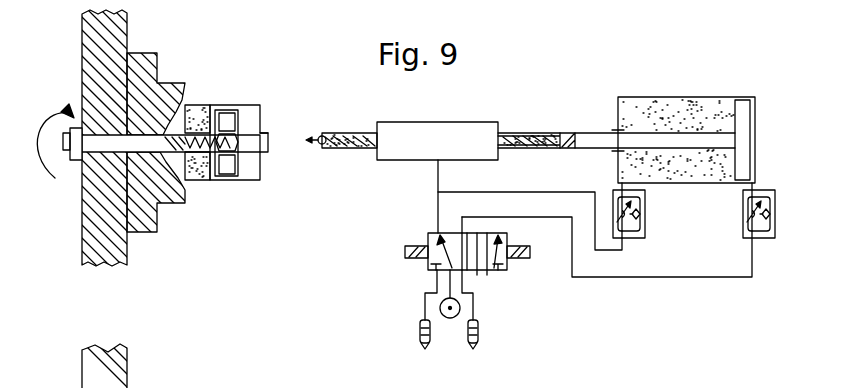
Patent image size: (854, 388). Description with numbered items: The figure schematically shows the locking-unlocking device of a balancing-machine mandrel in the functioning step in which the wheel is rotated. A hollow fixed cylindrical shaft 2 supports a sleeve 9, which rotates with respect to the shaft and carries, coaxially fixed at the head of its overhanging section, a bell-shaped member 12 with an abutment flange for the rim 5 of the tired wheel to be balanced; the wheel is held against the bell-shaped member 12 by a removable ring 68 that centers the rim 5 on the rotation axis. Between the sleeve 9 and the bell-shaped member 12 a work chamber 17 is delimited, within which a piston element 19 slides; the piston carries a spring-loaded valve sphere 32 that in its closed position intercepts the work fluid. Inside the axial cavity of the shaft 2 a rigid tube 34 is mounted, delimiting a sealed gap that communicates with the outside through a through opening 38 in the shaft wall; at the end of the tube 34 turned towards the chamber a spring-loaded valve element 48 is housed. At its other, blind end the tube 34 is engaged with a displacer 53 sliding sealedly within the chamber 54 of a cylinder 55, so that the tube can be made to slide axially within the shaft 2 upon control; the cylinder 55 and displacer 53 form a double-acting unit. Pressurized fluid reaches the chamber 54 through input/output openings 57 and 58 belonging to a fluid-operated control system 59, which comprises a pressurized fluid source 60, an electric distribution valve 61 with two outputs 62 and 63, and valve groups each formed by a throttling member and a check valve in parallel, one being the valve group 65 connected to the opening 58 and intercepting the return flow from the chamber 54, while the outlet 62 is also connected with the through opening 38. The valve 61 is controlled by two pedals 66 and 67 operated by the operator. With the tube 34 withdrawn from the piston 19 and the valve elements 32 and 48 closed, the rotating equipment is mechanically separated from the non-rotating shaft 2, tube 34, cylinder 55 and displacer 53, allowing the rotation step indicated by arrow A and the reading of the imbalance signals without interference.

The cylindrical shaft 2 is at (437, 121).
The tired wheel rim 5 is at (82, 266).
The sleeve 9 is at (262, 173).
The bell-shaped member 12 is at (157, 100).
The work chamber 17 is at (248, 170).
The piston element 19 is at (222, 106).
The sphere 32 is at (212, 181).
The tube 34 is at (348, 132).
The through opening 38 is at (439, 176).
The valve element 48 is at (319, 135).
The displacer 53 is at (741, 110).
The chamber 54 is at (642, 118).
The cylinder 55 is at (672, 97).
The input/output opening 57 is at (619, 188).
The input/output opening 58 is at (754, 188).
The fluid-operated control system 59 is at (386, 265).
The pressurized fluid source 60 is at (447, 318).
The electric distribution valve 61 is at (508, 270).
The outlet 62 is at (436, 205).
The output 63 is at (533, 218).
The valve group 65 is at (777, 213).
The control pedal 66 is at (420, 336).
The control pedal 67 is at (479, 333).
The ring 68 is at (76, 160).
The arrow A is at (47, 100).